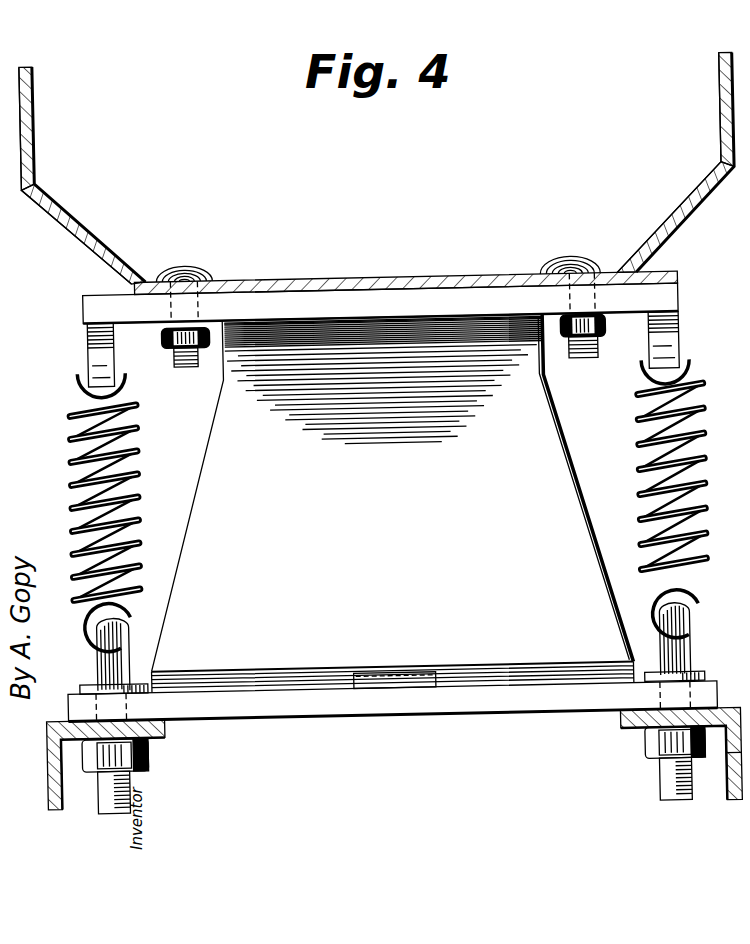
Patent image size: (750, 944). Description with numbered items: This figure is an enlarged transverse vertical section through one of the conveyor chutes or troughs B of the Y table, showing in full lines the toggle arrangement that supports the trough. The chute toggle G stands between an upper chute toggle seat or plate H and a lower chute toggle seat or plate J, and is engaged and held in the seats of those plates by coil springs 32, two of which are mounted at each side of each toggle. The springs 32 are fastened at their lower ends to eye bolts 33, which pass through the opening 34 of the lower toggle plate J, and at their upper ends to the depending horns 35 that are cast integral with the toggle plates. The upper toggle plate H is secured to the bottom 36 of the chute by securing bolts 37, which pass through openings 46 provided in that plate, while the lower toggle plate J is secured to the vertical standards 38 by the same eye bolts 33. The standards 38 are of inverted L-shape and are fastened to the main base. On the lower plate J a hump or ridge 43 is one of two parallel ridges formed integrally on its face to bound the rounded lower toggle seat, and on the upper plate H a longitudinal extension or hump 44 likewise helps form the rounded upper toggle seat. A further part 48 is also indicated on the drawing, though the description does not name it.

The conveyor chute or trough B is at (377, 169).
The upper chute toggle seat or plate H is at (380, 303).
The chute toggle G is at (388, 492).
The lower chute toggle seat or plate J is at (377, 707).
The coil spring 32 is at (135, 458).
The eye bolt 33 is at (115, 657).
The opening of toggle plate J 34 is at (127, 707).
The depending horn 35 is at (87, 348).
The chute bottom 36 is at (410, 282).
The securing bolt 37 is at (187, 368).
The vertical standard 38 is at (732, 787).
The hump or ridge 43 is at (330, 682).
The longitudinal extension or hump 44 is at (468, 327).
The opening 46 is at (203, 302).
The side member 48 is at (738, 698).